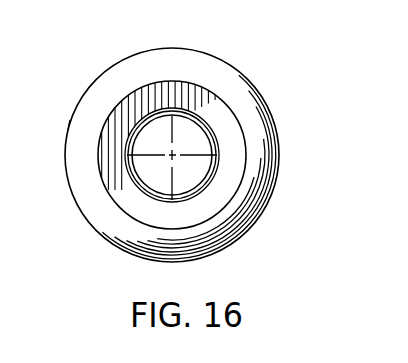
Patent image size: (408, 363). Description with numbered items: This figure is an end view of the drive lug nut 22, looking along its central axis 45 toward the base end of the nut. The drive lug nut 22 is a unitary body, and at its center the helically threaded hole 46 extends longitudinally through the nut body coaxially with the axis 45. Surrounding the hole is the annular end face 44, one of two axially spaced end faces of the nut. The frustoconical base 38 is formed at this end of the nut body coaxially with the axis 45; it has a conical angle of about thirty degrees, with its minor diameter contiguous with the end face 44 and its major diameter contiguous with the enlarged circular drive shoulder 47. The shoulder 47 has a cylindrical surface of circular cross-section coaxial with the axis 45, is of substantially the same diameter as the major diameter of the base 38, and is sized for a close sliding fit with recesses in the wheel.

The drive lug nut 22 is at (246, 78).
The frustoconical base 38 is at (253, 132).
The annular end face 44 is at (130, 207).
The central axis 45 is at (172, 155).
The helically threaded hole 46 is at (210, 182).
The enlarged circular drive shoulder 47 is at (68, 130).